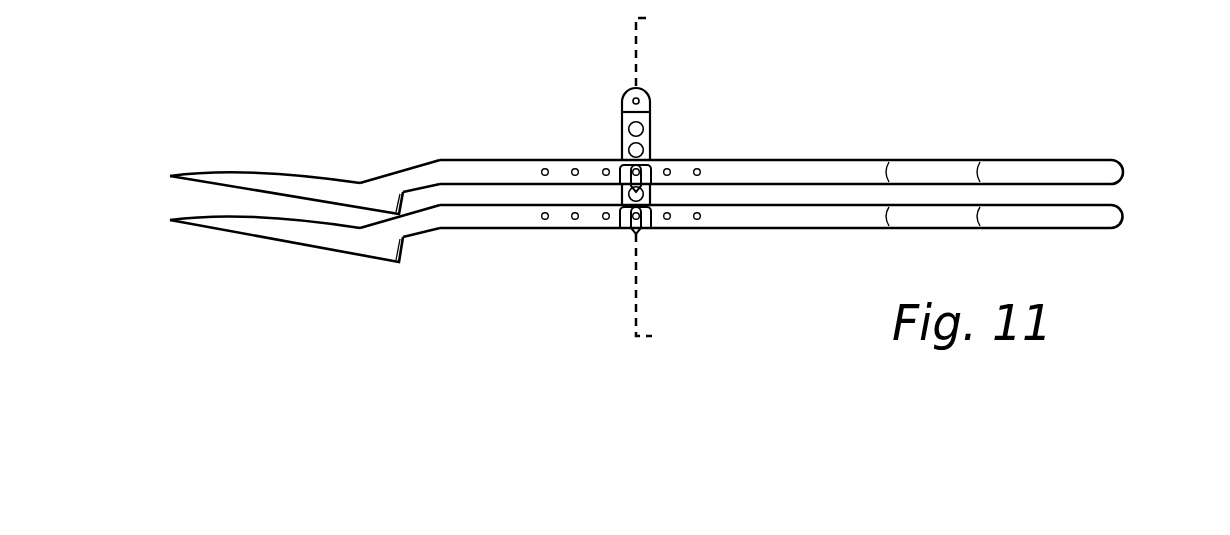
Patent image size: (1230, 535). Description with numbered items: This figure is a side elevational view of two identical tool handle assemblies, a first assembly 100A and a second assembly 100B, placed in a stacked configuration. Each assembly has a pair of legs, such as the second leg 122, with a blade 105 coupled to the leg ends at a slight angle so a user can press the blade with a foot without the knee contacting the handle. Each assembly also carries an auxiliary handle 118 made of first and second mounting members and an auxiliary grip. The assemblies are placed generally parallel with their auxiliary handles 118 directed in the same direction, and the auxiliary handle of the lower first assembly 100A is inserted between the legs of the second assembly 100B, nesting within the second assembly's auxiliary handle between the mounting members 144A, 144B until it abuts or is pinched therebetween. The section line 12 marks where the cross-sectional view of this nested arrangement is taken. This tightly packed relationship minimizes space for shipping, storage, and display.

The section line 12 is at (663, 18).
The first tool handle assembly 100A is at (1117, 227).
The second tool handle assembly 100B is at (1113, 160).
The blade 105 is at (238, 172).
The auxiliary handle 118 is at (646, 91).
The second leg 122 is at (503, 159).
The second mounting member of the first assembly 144A is at (651, 195).
The second mounting member of the second assembly 144B is at (651, 140).